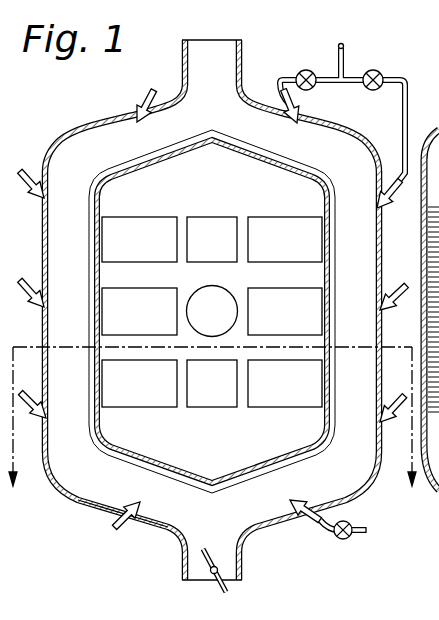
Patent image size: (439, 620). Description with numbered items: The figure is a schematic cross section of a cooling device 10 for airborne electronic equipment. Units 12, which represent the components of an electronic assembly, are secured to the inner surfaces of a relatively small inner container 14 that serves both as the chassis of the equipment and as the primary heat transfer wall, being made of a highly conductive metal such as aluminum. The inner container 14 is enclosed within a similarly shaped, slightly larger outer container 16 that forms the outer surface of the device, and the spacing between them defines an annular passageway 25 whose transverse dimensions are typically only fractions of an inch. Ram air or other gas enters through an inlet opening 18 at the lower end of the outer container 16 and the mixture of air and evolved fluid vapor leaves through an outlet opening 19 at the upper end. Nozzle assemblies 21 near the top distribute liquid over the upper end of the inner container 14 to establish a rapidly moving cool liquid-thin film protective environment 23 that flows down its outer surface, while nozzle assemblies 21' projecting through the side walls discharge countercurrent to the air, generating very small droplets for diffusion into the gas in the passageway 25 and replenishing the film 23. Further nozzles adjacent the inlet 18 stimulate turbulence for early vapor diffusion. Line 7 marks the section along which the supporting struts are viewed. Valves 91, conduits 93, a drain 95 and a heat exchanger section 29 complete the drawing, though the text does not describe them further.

The cooling device 10 is at (61, 118).
The units 12 is at (131, 247).
The inner container 14 is at (185, 152).
The outer container 16 is at (92, 503).
The inlet opening 18 is at (220, 540).
The outlet opening 19 is at (221, 61).
The nozzle assemblies 21 is at (227, 104).
The nozzle assemblies 21' is at (211, 295).
The liquid-thin film protective environment 23 is at (147, 153).
The annular passageway 25 is at (78, 256).
The heat exchanger section 29 is at (421, 264).
The line 7- 7 is at (212, 428).
The valve 91 is at (305, 70).
The conduit 93 is at (283, 78).
The drain conduit 95 is at (226, 592).